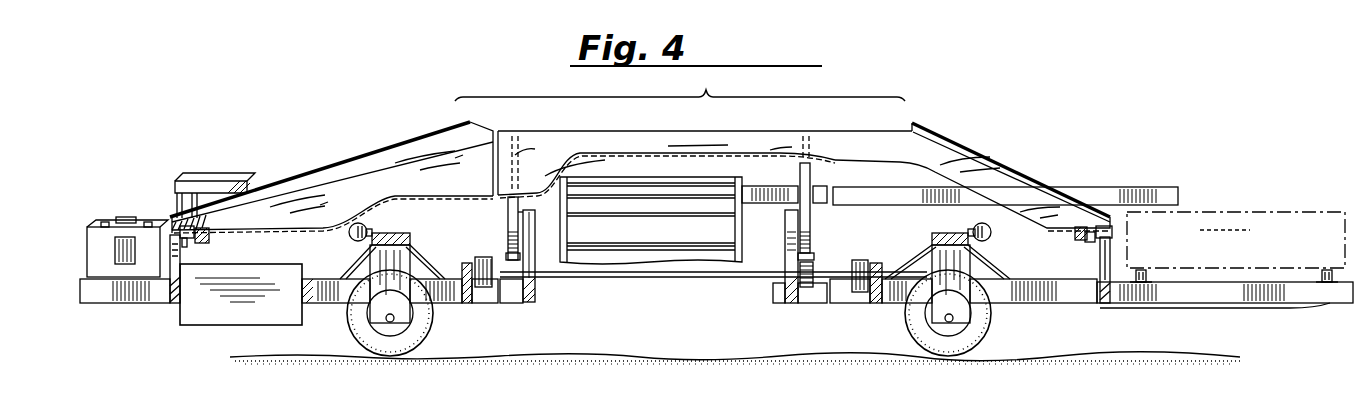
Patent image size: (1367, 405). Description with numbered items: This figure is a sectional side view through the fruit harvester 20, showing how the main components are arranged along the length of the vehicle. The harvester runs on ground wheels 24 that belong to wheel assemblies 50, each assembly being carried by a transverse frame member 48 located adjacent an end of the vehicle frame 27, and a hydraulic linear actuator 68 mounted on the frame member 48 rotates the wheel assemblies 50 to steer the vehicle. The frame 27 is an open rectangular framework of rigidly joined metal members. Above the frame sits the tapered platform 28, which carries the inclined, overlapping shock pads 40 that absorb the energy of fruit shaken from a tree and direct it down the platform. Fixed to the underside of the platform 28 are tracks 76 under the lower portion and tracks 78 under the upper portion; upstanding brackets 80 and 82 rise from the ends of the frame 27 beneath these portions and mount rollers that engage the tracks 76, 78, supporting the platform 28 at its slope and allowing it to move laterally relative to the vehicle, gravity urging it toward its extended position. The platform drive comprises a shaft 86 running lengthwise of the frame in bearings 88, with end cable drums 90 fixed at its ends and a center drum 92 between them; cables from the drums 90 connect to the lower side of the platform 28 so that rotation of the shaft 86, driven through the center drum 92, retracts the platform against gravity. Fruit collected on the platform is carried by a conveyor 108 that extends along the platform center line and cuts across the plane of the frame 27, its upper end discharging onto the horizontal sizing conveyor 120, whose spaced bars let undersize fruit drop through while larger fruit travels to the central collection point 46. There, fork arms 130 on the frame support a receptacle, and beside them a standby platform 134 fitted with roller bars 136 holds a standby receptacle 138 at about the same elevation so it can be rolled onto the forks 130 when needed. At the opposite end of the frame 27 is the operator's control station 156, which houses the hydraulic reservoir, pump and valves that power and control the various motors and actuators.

The fruit harvester 20 is at (1162, 166).
The ground wheels 24 is at (393, 350).
The vehicle frame 27 is at (897, 306).
The platform 28 is at (596, 138).
The shock pads 40 is at (242, 178).
The central collection point 46 is at (1260, 210).
The transverse frame members 48 is at (411, 235).
The wheel assemblies 50 is at (336, 264).
The hydraulic linear actuator 68 is at (364, 230).
The tracks 76 is at (213, 238).
The tracks 78 is at (506, 219).
The upstanding bracket 80 is at (173, 268).
The upstanding bracket 82 is at (533, 268).
The shaft 86 is at (658, 277).
The bearings 88 is at (465, 263).
The end cable drums 90 is at (485, 257).
The center drum 92 is at (813, 263).
The conveyor 108 is at (700, 258).
The sizing conveyor 120 is at (1118, 166).
The fork arms 130 is at (1224, 306).
The standby platform 134 is at (1320, 302).
The roller bars 136 is at (1141, 306).
The standby receptacle 138 is at (1220, 216).
The operator's control station 156 is at (122, 222).